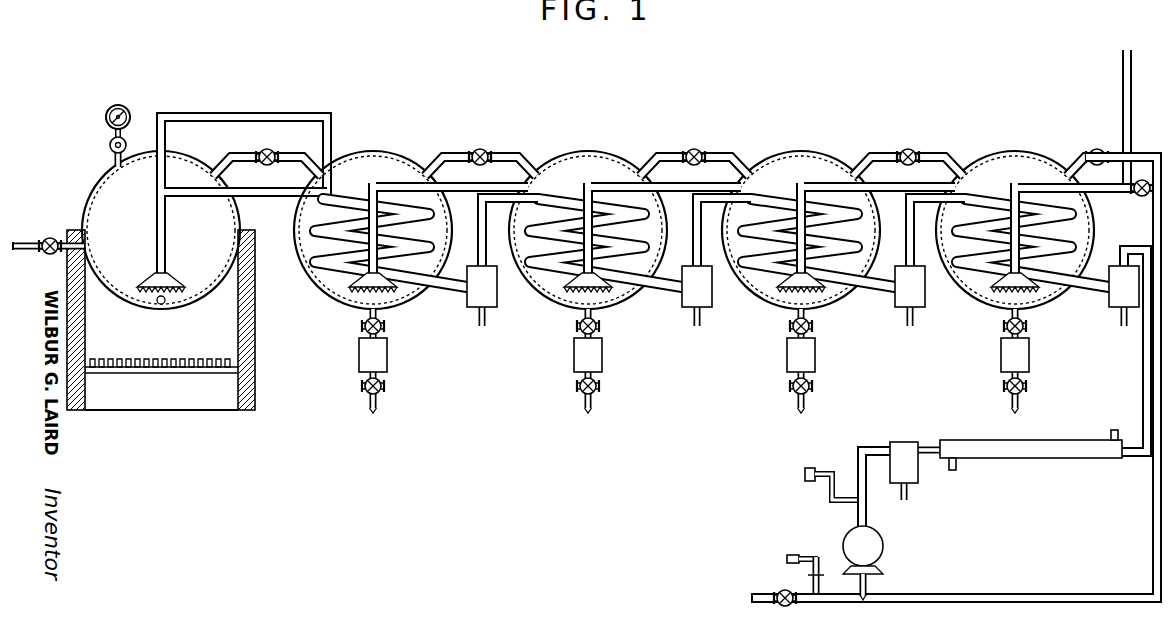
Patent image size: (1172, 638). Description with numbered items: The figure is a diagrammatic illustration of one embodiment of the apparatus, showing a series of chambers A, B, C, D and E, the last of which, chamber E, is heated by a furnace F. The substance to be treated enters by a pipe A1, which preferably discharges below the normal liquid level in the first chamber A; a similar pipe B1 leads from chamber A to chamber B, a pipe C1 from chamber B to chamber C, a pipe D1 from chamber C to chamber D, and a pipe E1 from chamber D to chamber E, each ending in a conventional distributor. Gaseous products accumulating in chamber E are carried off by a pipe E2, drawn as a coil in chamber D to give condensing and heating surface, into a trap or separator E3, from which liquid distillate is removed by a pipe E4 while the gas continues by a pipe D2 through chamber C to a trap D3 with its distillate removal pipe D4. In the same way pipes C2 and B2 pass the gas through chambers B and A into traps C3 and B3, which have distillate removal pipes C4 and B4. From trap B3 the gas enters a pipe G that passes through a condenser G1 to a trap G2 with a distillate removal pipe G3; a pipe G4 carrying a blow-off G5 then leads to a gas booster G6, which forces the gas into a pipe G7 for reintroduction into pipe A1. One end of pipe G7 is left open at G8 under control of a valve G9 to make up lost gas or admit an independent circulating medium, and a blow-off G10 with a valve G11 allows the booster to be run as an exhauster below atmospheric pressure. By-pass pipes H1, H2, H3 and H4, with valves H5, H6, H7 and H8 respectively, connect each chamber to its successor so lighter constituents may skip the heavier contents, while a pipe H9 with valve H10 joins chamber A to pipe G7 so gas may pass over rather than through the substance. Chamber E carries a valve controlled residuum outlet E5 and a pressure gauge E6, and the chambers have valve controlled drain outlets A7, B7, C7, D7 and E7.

The chamber A is at (1003, 165).
The pipe A1 is at (1123, 62).
The valve controlled outlet A7 is at (1013, 325).
The chamber B is at (815, 168).
The pipe B1 is at (935, 185).
The pipe B2 is at (910, 240).
The trap B3 is at (1117, 290).
The distillate removal pipe B4 is at (1122, 318).
The valve controlled outlet B7 is at (810, 325).
The chamber C is at (600, 170).
The pipe C1 is at (722, 186).
The pipe C2 is at (695, 242).
The trap C3 is at (913, 288).
The distillate removal pipe C4 is at (907, 318).
The valve controlled outlet C7 is at (597, 325).
The chamber D is at (385, 167).
The pipe D1 is at (508, 188).
The pipe D2 is at (480, 232).
The trap D3 is at (700, 290).
The distillate removal pipe D4 is at (692, 320).
The valve controlled outlet D7 is at (382, 325).
The chamber E is at (108, 197).
The pipe E1 is at (290, 197).
The pipe E2 is at (217, 117).
The trap or separator E3 is at (485, 290).
The distillate removal pipe E4 is at (478, 322).
The valve controlled outlet E5 is at (46, 240).
The pressure gauge E6 is at (107, 107).
The valve controlled outlet E7 is at (166, 301).
The furnace F is at (217, 335).
The pipe G is at (1152, 381).
The condenser G1 is at (1015, 456).
The trap G2 is at (913, 470).
The distillate removal pipe G3 is at (910, 493).
The pipe G4 is at (860, 463).
The blow-off G5 is at (826, 492).
The gas booster G6 is at (877, 547).
The pipe G7 is at (1118, 597).
The open end G8 is at (752, 595).
The valve G9 is at (780, 602).
The blow-off G10 is at (820, 560).
The valve G11 is at (1147, 196).
The by-pass pipe H1 is at (938, 157).
The by-pass pipe H2 is at (735, 160).
The by-pass pipe H3 is at (505, 157).
The by-pass pipe H4 is at (247, 158).
The valve H5 is at (912, 153).
The valve H6 is at (695, 153).
The valve H7 is at (482, 154).
The valve H8 is at (270, 152).
The pipe H9 is at (1078, 163).
The valve H10 is at (1100, 149).